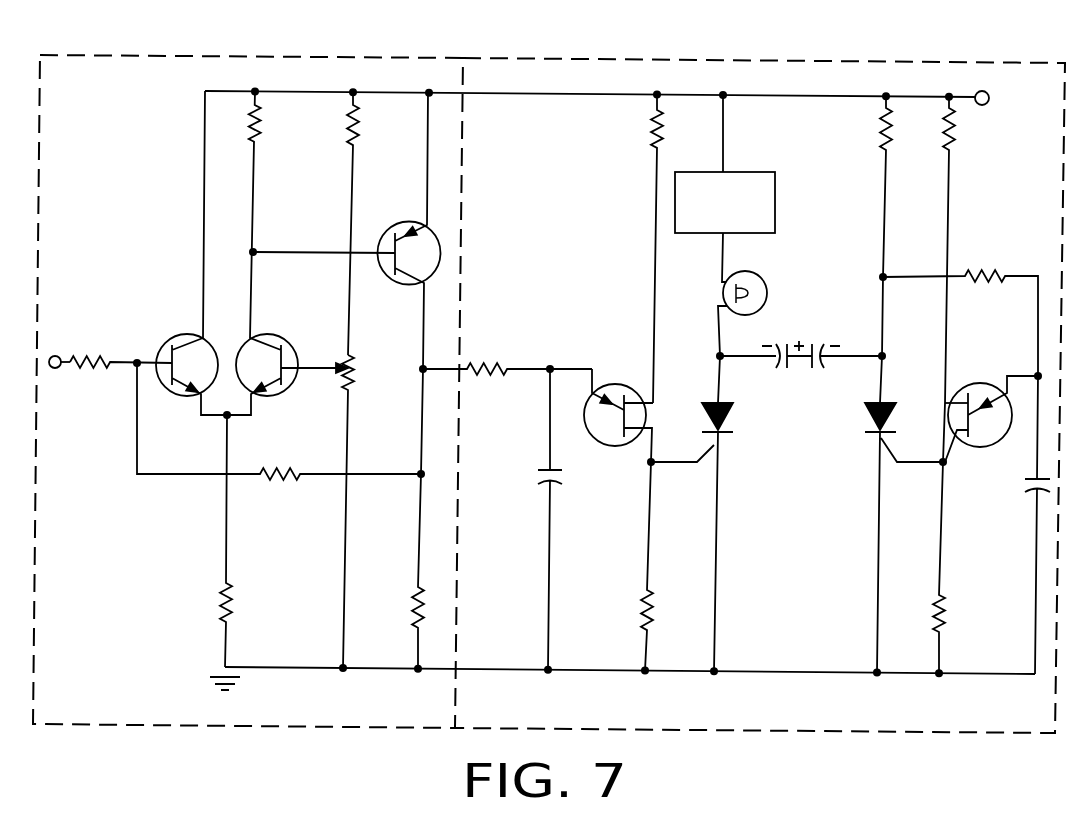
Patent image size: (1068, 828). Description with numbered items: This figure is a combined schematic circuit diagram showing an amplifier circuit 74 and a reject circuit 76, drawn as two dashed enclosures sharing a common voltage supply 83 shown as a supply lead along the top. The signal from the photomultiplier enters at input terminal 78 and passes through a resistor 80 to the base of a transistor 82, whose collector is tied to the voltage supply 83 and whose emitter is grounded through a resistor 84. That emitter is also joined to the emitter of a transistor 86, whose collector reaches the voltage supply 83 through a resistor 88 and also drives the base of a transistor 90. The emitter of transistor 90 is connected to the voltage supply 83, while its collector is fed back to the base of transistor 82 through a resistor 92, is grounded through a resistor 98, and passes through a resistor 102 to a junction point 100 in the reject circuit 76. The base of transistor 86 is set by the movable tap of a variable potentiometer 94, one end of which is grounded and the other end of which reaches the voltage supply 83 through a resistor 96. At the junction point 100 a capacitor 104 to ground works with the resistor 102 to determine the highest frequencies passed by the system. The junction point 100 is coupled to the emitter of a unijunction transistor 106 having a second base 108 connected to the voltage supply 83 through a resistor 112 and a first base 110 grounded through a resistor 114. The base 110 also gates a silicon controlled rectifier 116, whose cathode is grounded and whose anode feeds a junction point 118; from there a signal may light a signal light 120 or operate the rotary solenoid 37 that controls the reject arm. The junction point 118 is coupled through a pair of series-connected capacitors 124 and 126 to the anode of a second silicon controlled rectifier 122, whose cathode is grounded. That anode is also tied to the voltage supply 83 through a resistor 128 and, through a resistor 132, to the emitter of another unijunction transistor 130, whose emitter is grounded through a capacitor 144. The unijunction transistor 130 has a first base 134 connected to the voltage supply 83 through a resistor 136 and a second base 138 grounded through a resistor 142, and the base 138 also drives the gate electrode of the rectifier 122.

The rotary solenoid 37 is at (776, 208).
The amplifier circuit 74 is at (245, 55).
The reject circuit 76 is at (755, 62).
The input terminal 78 is at (62, 355).
The resistor 80 is at (105, 356).
The transistor 82 is at (164, 344).
The voltage supply 83 is at (570, 97).
The resistor 84 is at (222, 603).
The transistor 86 is at (290, 336).
The resistor 88 is at (258, 138).
The transistor 90 is at (402, 284).
The resistor 92 is at (300, 468).
The variable potentiometer 94 is at (354, 386).
The resistor 96 is at (355, 130).
The resistor 98 is at (416, 606).
The junction point 100 is at (553, 365).
The resistor 102 is at (510, 364).
The capacitor 104 is at (547, 486).
The unijunction transistor 106 is at (602, 441).
The second base 108 is at (626, 392).
The first base 110 is at (641, 448).
The resistor 112 is at (654, 131).
The resistor 114 is at (645, 610).
The silicon controlled rectifier 116 is at (733, 433).
The junction point 118 is at (717, 354).
The signal light 120 is at (763, 288).
The silicon controlled rectifier 122 is at (866, 433).
The capacitor 124 is at (780, 366).
The capacitor 126 is at (820, 366).
The resistor 128 is at (884, 130).
The unijunction transistor 130 is at (1000, 384).
The resistor 132 is at (1005, 271).
The first base 134 is at (953, 413).
The resistor 136 is at (953, 136).
The second base 138 is at (958, 440).
The resistor 142 is at (946, 612).
The capacitor 144 is at (1030, 492).